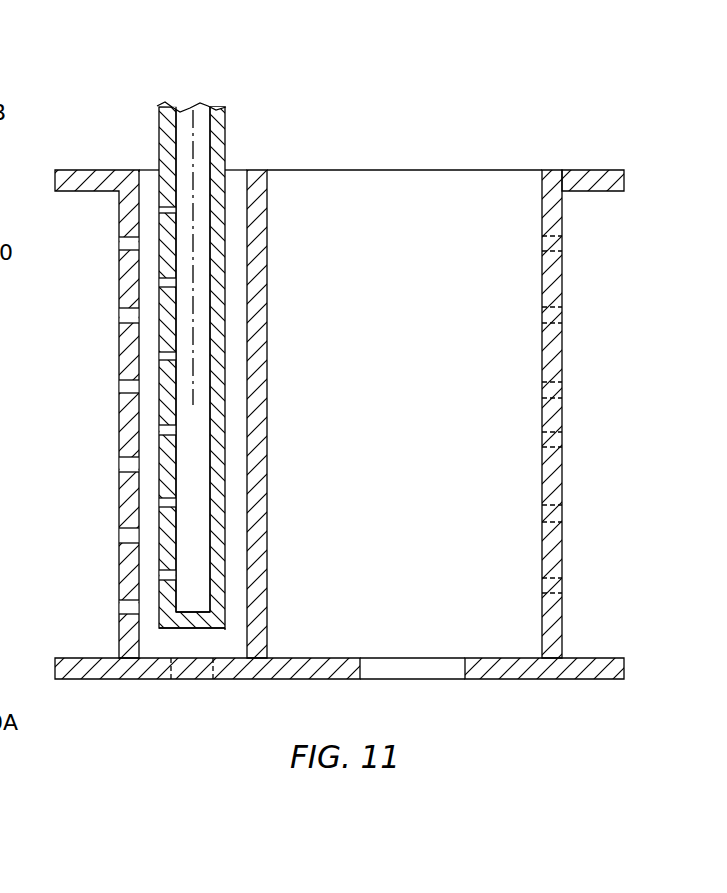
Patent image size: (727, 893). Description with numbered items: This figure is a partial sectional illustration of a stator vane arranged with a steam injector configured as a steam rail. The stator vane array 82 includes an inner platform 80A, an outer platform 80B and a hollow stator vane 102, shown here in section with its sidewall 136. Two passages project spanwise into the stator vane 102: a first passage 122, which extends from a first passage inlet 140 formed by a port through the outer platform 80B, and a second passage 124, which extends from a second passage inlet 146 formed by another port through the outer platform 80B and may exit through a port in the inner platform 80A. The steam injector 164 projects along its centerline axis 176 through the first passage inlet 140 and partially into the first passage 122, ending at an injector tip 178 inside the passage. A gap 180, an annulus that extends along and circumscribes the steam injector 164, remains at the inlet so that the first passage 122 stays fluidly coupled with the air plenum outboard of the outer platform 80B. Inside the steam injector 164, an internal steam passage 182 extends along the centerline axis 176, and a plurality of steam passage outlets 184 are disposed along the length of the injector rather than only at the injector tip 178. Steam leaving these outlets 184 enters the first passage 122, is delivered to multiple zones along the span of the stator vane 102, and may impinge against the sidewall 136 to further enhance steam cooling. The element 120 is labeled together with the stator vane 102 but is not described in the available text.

The stator vane array 82 is at (424, 131).
The outer platform 80B is at (640, 176).
The inner platform 80A is at (642, 669).
The second passage inlet 146 is at (425, 185).
The sidewall 136 is at (337, 414).
The steam passage outlet 184 is at (166, 210).
The stator vane 102 is at (629, 414).
The outer wall 120 is at (583, 292).
The second passage 124 is at (432, 540).
The steam injector 164 is at (227, 376).
The steam passage 182 is at (200, 127).
The centerline axis 176 is at (195, 395).
The injector tip 178 is at (168, 627).
The first passage inlet 140 is at (101, 371).
The gap 180 is at (148, 177).
The first passage 122 is at (230, 648).